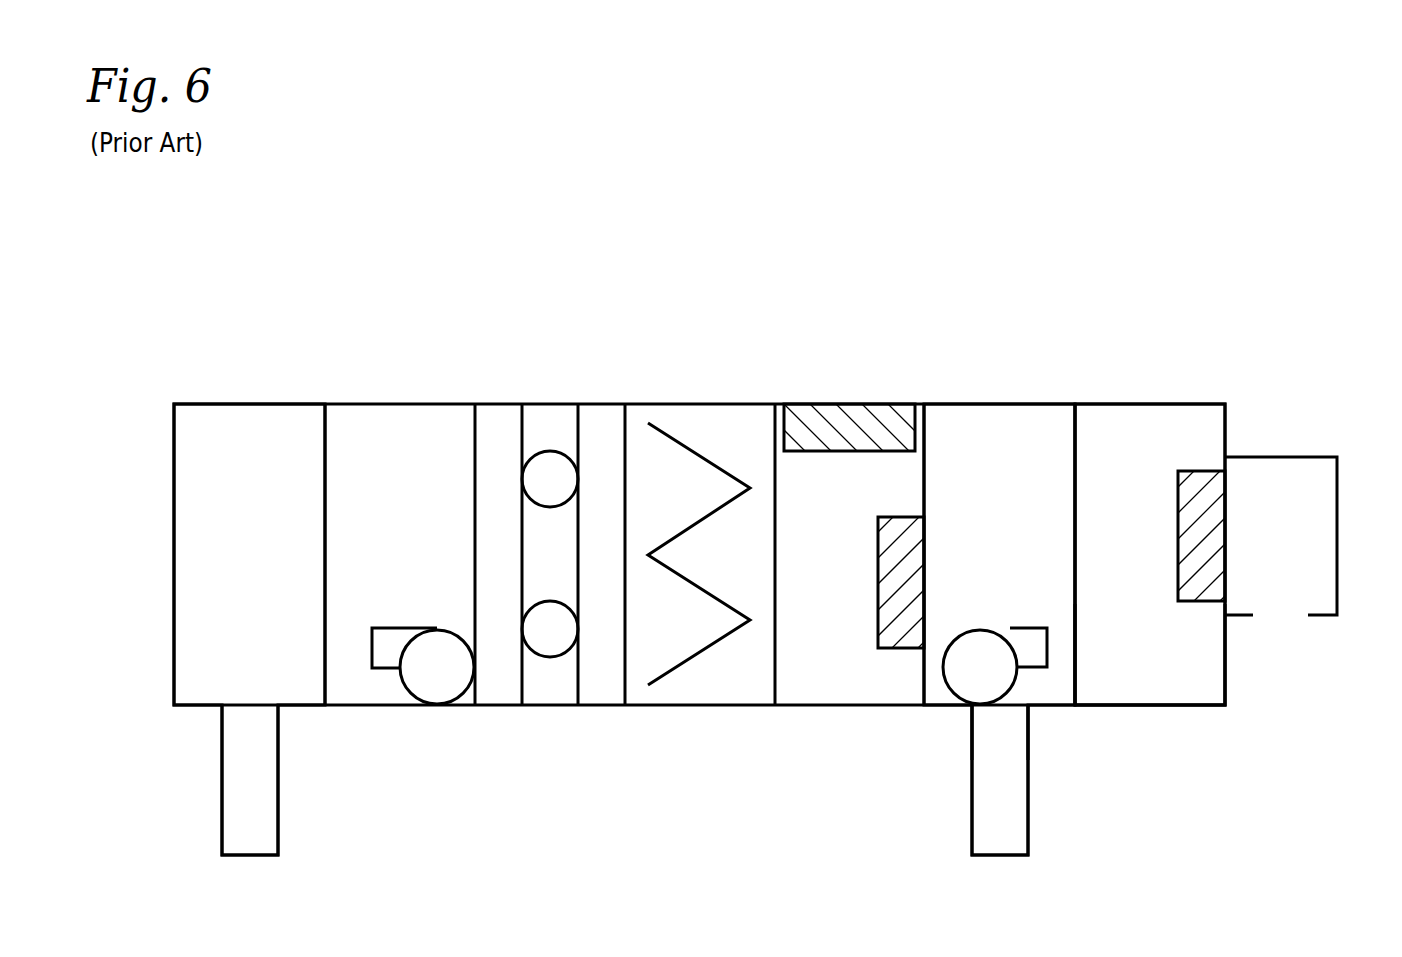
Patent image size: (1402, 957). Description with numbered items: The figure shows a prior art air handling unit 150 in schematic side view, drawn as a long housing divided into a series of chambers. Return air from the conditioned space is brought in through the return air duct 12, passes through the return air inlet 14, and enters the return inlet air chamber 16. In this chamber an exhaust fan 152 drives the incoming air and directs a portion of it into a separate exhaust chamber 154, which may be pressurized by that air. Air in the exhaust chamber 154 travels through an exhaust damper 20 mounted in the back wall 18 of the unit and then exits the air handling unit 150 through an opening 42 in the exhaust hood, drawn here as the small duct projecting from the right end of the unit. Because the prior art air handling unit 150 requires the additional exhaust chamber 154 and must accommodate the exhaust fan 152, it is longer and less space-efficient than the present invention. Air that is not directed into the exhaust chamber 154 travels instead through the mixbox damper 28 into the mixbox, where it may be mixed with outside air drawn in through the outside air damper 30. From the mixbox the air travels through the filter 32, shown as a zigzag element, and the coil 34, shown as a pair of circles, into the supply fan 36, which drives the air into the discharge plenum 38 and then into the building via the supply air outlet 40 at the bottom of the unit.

The prior art air handling unit 150 is at (586, 258).
The discharge plenum 38 is at (253, 428).
The supply air outlet 40 is at (240, 777).
The supply fan 36 is at (408, 690).
The coil 34 is at (537, 660).
The filter 32 is at (667, 677).
The outside air damper 30 is at (847, 417).
The mixbox damper 28 is at (902, 650).
The return inlet air chamber 16 is at (1040, 438).
The exhaust fan 152 is at (1048, 648).
The return air inlet 14 is at (1013, 707).
The return air duct 12 is at (1010, 817).
The exhaust damper 20 is at (1203, 467).
The back wall 18 is at (1228, 430).
The exhaust chamber 154 is at (1165, 635).
The opening 42 is at (1290, 612).